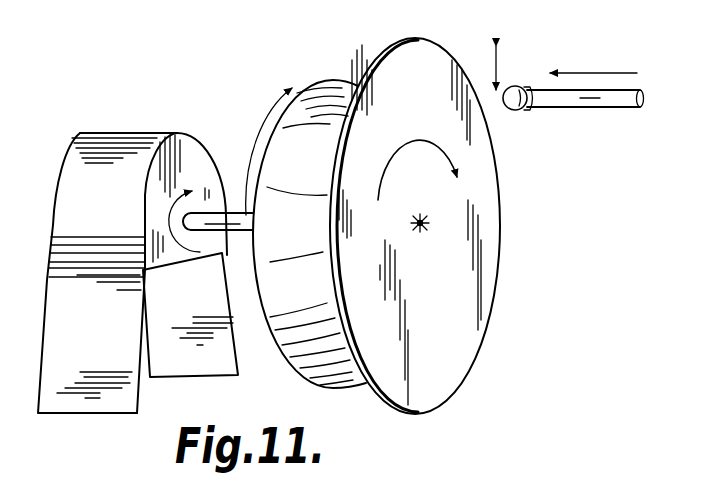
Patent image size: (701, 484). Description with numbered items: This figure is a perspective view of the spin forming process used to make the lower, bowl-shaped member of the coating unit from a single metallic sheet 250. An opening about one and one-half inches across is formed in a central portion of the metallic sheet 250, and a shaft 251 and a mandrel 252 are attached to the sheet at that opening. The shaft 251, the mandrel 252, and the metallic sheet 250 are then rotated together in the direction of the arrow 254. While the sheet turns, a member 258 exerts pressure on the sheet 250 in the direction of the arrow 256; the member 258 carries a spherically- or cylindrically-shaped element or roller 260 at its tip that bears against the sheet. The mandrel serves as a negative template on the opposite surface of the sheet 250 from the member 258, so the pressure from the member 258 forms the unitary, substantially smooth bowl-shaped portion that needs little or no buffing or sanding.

The metallic sheet 250 is at (473, 288).
The shaft 251 is at (235, 213).
The mandrel 252 is at (313, 83).
The arrow 254 is at (418, 135).
The arrow 256 is at (607, 73).
The member 258 is at (590, 108).
The roller 260 is at (515, 110).